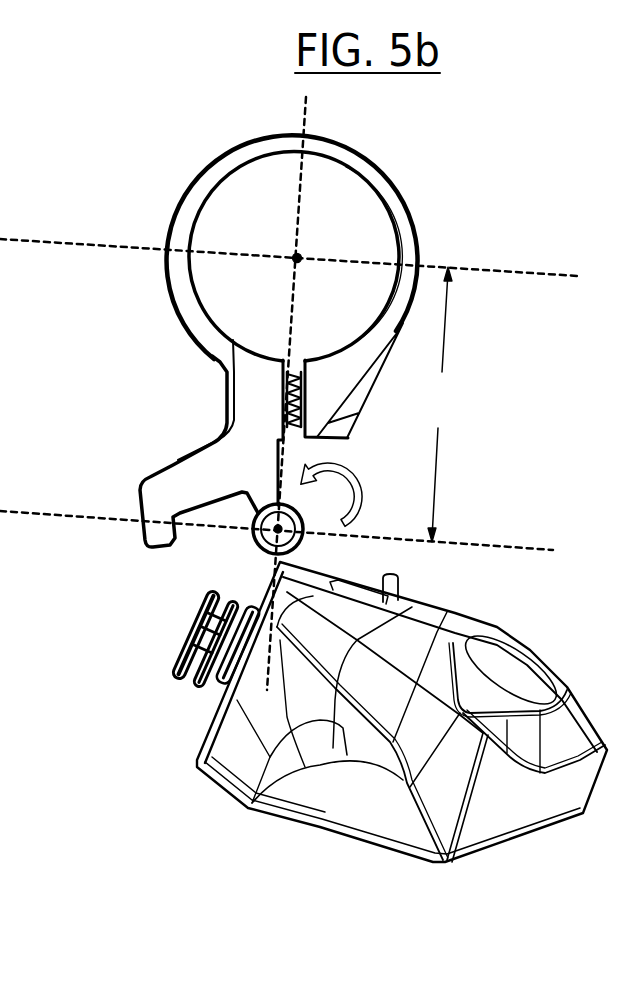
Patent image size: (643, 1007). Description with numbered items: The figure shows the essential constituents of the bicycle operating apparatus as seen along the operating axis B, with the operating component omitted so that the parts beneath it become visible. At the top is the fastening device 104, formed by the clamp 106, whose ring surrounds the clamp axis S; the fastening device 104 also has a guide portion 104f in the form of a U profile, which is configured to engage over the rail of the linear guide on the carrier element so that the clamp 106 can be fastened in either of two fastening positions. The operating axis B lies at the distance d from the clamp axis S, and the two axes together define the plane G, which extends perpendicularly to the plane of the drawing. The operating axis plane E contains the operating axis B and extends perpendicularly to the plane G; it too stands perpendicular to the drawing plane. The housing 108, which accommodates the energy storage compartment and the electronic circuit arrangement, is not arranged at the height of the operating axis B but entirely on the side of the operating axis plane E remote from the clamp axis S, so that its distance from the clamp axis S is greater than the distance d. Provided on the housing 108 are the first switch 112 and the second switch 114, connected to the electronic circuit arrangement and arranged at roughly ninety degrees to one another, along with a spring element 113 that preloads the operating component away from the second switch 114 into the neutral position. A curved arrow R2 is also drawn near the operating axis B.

The fastening device 104 is at (214, 248).
The clamp 106 is at (182, 195).
The guide portion 104f is at (200, 485).
The housing 108 is at (317, 707).
The first switch 112 is at (406, 583).
The spring element 113 is at (173, 677).
The second switch 114 is at (176, 639).
The operating axis B is at (259, 543).
The clamp axis S is at (297, 256).
The plane G is at (307, 122).
The operating axis plane E is at (53, 512).
The rotation direction R2 is at (346, 467).
The distance d is at (440, 404).